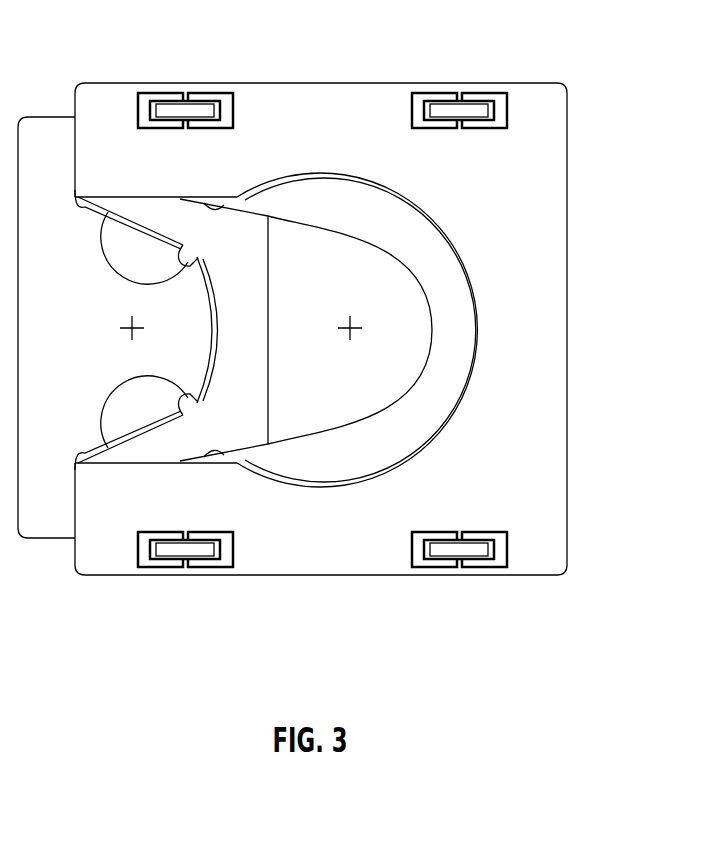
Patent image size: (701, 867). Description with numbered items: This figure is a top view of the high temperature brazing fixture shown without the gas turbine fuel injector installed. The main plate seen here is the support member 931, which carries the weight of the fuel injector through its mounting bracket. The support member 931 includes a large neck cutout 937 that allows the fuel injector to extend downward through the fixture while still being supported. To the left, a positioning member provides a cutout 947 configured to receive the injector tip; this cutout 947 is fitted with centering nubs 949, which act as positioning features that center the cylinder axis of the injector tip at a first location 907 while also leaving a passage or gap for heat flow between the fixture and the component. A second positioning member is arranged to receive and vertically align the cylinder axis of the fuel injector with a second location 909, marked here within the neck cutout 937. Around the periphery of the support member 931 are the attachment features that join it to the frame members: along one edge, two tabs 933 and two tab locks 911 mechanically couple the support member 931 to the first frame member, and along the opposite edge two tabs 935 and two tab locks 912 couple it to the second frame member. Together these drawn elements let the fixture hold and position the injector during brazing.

The support member 931 is at (557, 322).
The tab 935 is at (168, 98).
The tab lock 912 is at (227, 96).
The tab 933 is at (165, 550).
The tab lock 911 is at (225, 562).
The neck cutout 937 is at (420, 213).
The centering nubs 949 is at (198, 262).
The cutout 947 is at (103, 447).
The first location 907 is at (122, 326).
The second location 909 is at (345, 326).